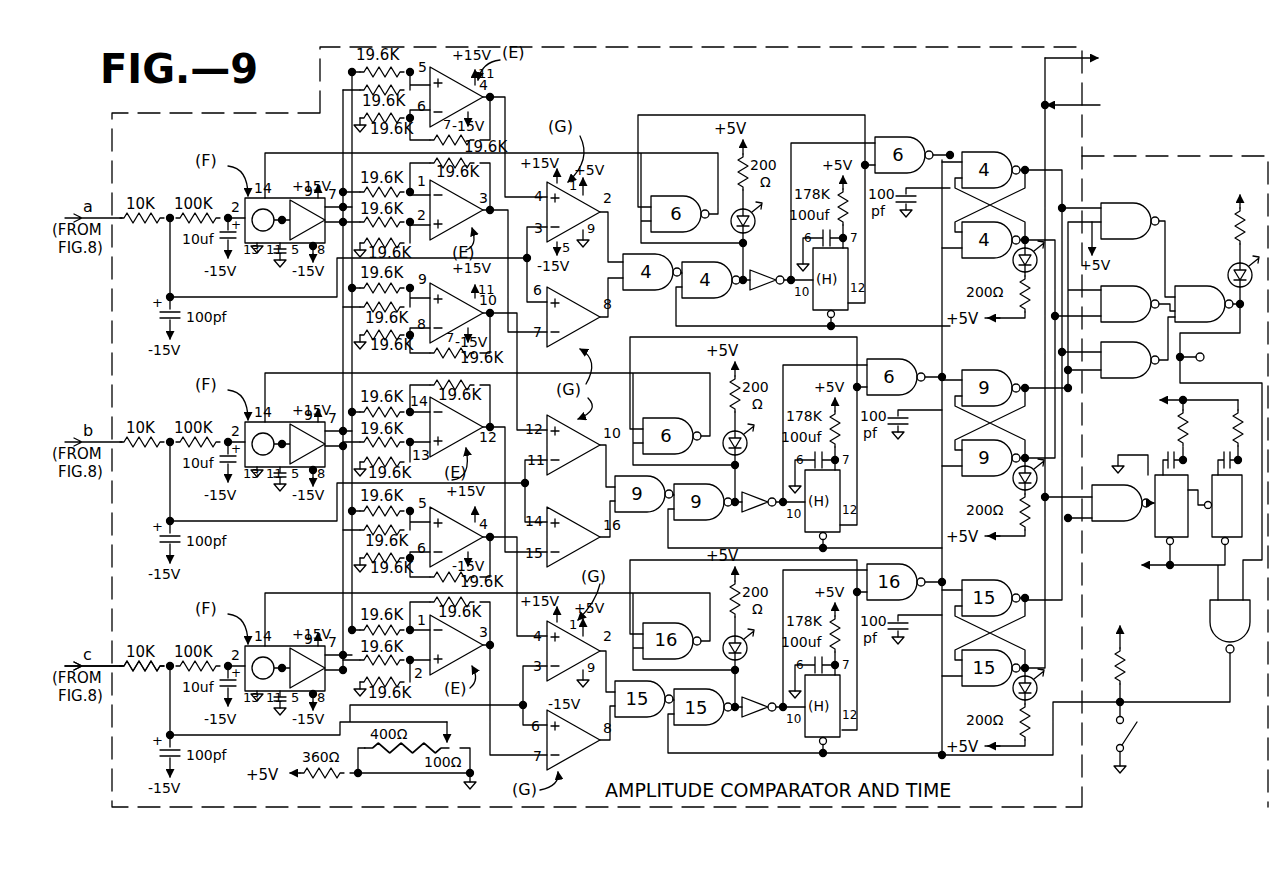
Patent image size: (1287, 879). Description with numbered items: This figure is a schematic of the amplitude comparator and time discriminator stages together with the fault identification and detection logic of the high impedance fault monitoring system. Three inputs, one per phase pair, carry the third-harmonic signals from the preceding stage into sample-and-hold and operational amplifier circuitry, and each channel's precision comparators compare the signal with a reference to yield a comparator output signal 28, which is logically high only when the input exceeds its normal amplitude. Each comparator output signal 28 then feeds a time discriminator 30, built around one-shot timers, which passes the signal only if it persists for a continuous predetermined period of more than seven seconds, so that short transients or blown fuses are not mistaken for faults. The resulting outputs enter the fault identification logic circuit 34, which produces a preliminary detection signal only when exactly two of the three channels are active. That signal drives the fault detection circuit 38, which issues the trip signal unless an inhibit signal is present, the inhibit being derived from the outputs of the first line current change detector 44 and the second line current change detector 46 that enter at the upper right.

The comparator output signal 28 is at (92, 692).
The time discriminator 30 is at (108, 748).
The fault identification logic circuit 34 is at (1222, 154).
The fault detection circuit 38 is at (1102, 454).
The first line current change detector 44 is at (1151, 70).
The second line current change detector 46 is at (1152, 117).